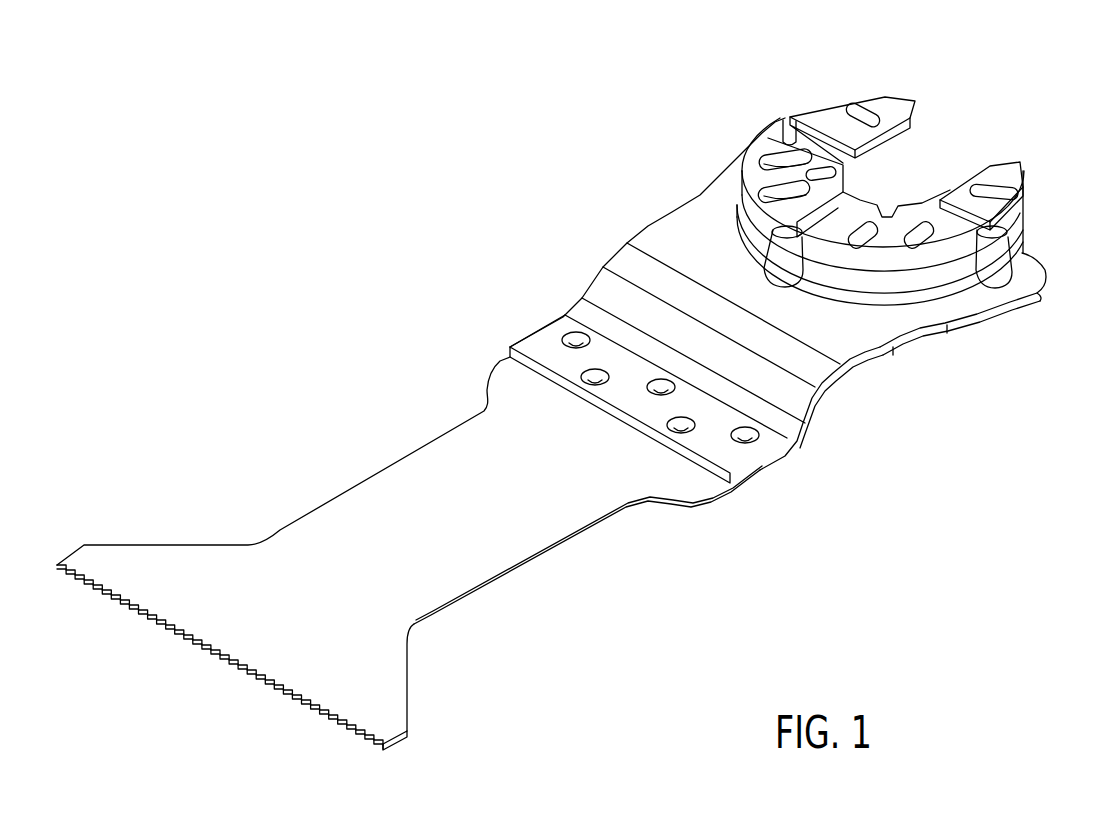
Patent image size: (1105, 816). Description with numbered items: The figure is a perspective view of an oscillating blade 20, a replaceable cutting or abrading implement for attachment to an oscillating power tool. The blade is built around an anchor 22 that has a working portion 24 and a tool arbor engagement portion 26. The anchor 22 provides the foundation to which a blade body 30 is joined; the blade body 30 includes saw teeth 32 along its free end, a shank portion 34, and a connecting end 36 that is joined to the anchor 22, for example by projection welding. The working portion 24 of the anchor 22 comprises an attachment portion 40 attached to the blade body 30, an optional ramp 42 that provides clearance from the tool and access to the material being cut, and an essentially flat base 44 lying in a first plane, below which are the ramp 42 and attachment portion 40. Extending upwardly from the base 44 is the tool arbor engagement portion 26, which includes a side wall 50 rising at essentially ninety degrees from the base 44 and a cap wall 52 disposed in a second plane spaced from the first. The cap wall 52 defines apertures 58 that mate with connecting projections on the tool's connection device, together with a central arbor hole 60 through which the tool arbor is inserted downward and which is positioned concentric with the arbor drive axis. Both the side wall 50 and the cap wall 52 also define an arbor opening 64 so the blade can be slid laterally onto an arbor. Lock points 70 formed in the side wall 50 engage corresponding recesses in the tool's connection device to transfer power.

The oscillating blade 20 is at (323, 293).
The anchor 22 is at (628, 228).
The working portion 24 is at (521, 318).
The tool arbor engagement portion 26 is at (878, 77).
The blade body 30 is at (548, 570).
The saw teeth 32 is at (347, 735).
The shank portion 34 is at (353, 505).
The connecting end 36 is at (745, 484).
The attachment portion 40 is at (733, 456).
The ramp 42 is at (827, 413).
The base 44 is at (872, 337).
The side wall 50 is at (903, 288).
The cap wall 52 is at (892, 104).
The apertures 58 is at (855, 108).
The central arbor hole 60 is at (860, 177).
The arbor opening 64 is at (960, 135).
The lock point 70 is at (790, 126).